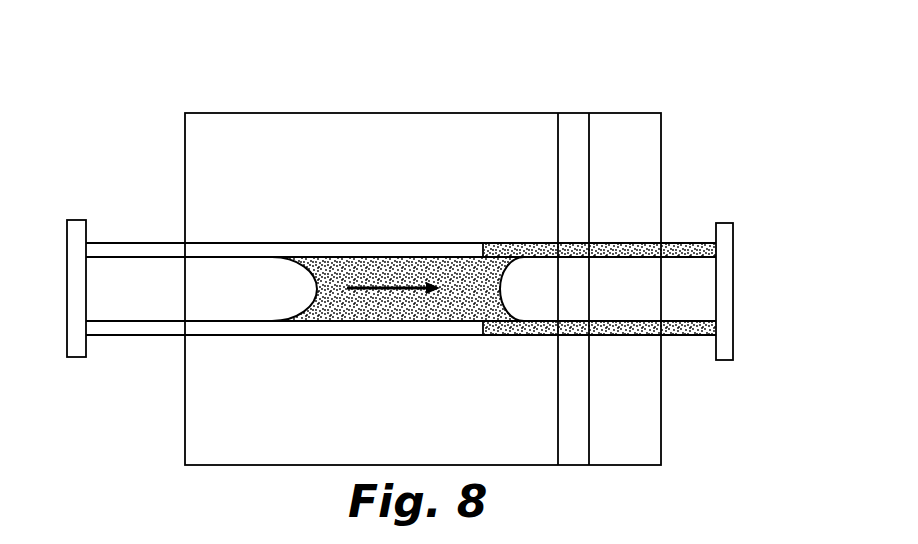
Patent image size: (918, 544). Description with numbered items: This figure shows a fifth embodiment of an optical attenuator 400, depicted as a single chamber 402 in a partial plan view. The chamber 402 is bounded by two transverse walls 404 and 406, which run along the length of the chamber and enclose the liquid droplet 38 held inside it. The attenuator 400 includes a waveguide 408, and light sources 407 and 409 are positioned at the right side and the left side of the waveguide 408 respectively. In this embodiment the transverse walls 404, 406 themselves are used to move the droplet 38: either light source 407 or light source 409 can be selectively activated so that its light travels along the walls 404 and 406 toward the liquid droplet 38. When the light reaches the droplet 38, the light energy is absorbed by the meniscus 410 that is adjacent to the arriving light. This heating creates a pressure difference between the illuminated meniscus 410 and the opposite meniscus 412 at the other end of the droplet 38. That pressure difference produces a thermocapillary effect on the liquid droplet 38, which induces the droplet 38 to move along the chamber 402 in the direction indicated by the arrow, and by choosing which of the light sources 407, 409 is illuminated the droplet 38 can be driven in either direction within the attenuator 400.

The attenuator 400 is at (712, 95).
The chamber 402 is at (235, 277).
The transverse wall 404 is at (353, 248).
The transverse wall 406 is at (327, 330).
The light source 407 is at (725, 258).
The waveguide 408 is at (575, 402).
The light source 409 is at (77, 230).
The meniscus 410 is at (510, 272).
The opposite meniscus 412 is at (310, 303).
The liquid droplet 38 is at (442, 263).